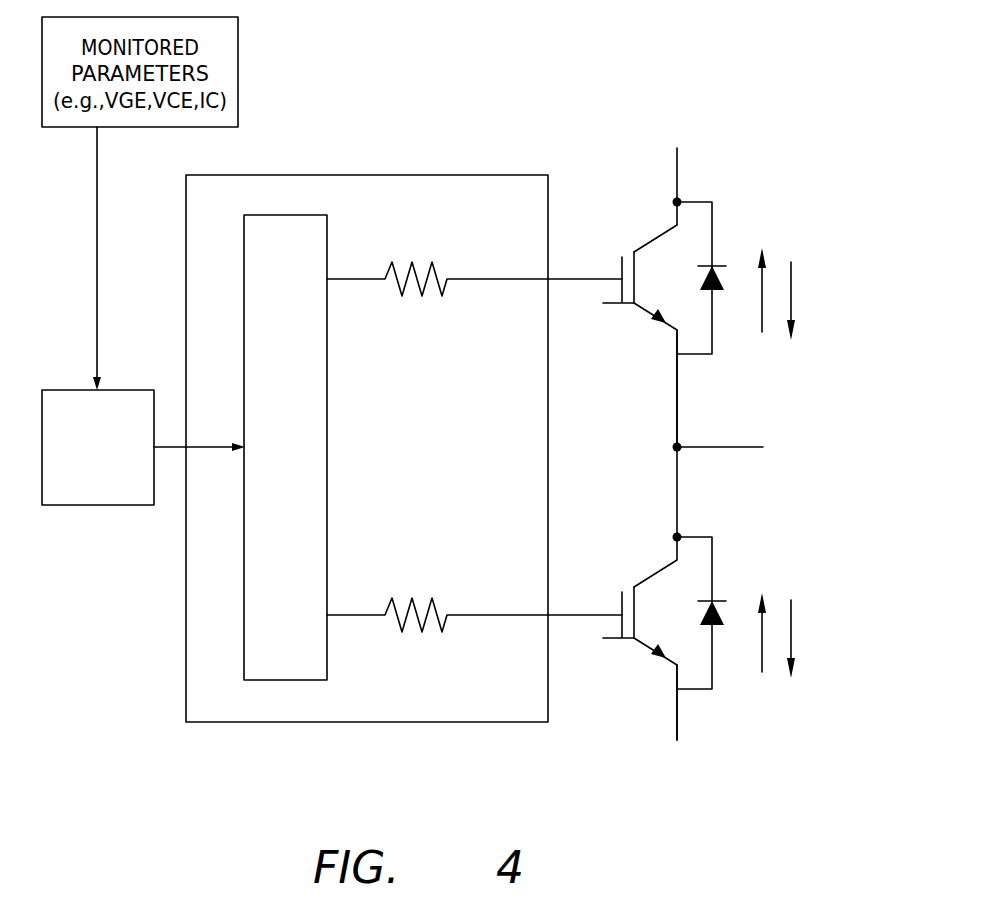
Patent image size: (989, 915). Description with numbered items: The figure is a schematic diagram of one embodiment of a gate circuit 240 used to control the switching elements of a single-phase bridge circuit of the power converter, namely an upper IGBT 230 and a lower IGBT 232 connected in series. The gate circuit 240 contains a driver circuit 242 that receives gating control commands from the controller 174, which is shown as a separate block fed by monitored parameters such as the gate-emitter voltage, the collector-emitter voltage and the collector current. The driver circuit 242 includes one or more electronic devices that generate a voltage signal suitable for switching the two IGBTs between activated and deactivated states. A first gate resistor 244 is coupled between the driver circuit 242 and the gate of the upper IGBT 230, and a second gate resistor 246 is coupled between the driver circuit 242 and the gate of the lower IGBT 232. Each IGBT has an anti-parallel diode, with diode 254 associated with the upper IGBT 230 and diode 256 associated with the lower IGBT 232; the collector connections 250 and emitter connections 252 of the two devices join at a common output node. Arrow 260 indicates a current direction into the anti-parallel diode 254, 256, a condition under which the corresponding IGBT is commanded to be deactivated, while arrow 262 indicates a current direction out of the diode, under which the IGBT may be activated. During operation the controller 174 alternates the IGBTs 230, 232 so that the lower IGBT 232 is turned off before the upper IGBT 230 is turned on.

The controller 174 is at (120, 463).
The gate circuit 240 is at (388, 175).
The driver circuit 242 is at (308, 396).
The first gate resistor 244 is at (419, 262).
The second gate resistor 246 is at (420, 598).
The upper IGBT 230 is at (628, 240).
The lower IGBT 232 is at (628, 577).
The collector terminal 250 is at (671, 214).
The emitter terminal 252 is at (673, 343).
The anti-parallel diode 254 is at (716, 265).
The anti-parallel diode 256 is at (716, 600).
The arrow 260 is at (762, 332).
The arrow 262 is at (794, 275).